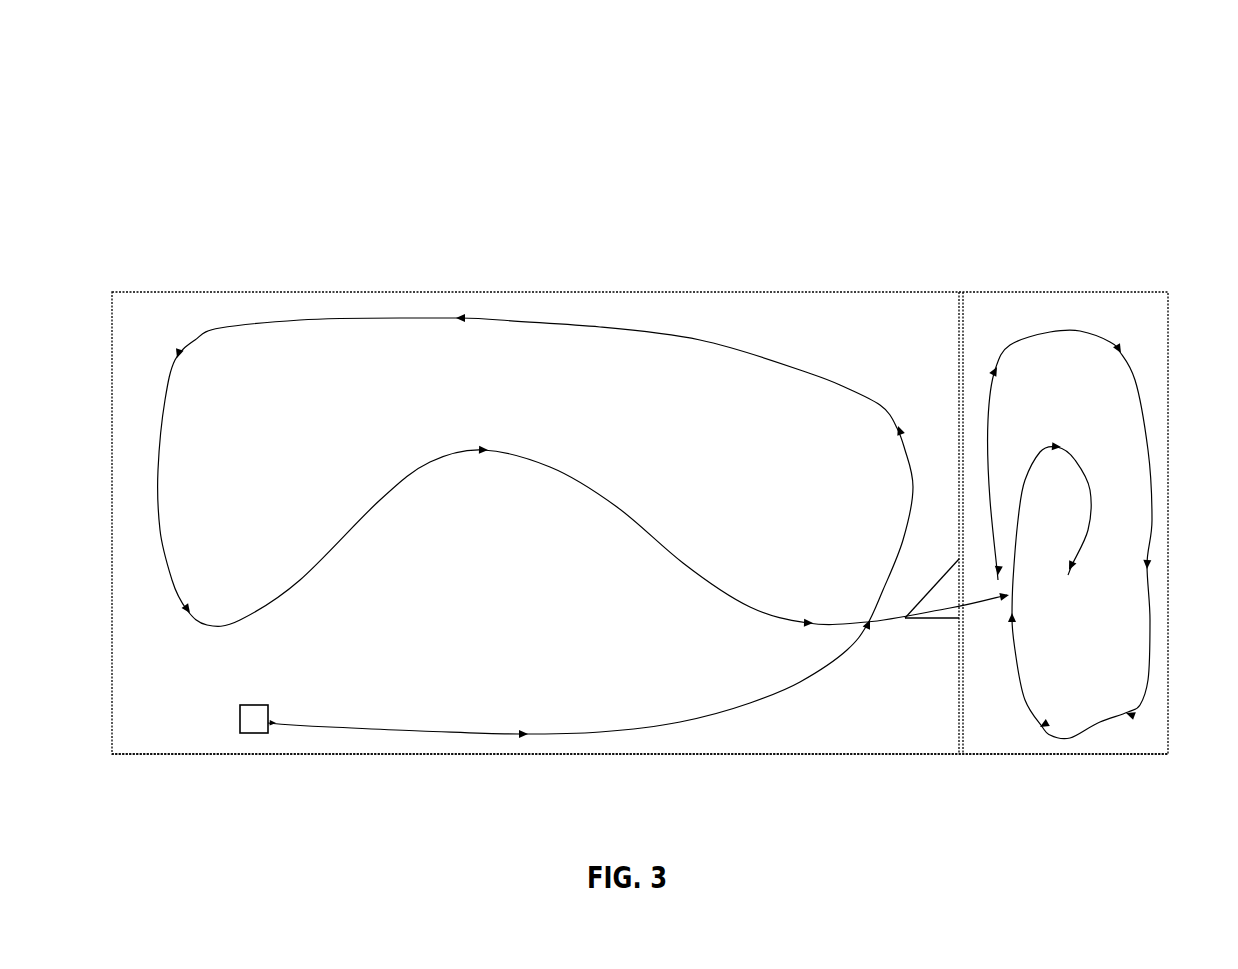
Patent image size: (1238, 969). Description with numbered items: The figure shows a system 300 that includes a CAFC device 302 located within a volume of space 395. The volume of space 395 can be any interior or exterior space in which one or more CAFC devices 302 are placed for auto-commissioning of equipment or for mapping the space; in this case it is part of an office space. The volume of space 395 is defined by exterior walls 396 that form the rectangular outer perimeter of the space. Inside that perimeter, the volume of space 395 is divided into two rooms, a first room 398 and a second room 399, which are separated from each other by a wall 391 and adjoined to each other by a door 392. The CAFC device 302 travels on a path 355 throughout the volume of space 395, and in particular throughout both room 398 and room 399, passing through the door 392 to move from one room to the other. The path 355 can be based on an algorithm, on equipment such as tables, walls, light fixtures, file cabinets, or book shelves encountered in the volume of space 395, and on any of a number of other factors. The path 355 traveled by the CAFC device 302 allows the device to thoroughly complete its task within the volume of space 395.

The system 300 is at (820, 151).
The CAFC device 302 is at (183, 767).
The path 355 is at (655, 526).
The wall 391 is at (925, 523).
The door 392 is at (889, 583).
The volume of space 395 is at (640, 779).
The exterior walls 396 is at (640, 510).
The room 398 is at (501, 517).
The room 399 is at (1081, 643).